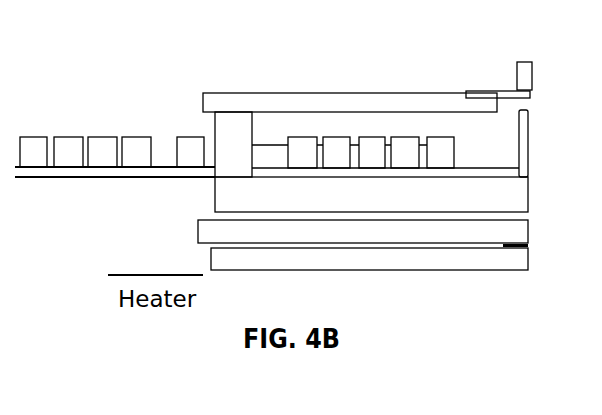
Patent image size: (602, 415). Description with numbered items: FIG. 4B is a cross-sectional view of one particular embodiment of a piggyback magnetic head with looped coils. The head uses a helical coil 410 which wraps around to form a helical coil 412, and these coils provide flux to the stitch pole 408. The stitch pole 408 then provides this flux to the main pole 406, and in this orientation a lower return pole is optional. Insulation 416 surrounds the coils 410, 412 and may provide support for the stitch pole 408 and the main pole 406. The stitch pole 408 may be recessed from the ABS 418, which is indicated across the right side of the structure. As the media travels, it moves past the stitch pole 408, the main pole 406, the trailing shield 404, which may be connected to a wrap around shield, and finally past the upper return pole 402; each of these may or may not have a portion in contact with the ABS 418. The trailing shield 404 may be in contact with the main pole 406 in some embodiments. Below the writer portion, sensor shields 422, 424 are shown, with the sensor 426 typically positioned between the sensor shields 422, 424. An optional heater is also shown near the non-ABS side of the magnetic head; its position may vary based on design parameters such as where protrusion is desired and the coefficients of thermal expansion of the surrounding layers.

The upper return pole 402 is at (533, 75).
The trailing shield 404 is at (530, 148).
The main pole 406 is at (502, 91).
The stitch pole 408 is at (373, 93).
The helical coil 410 is at (440, 138).
The helical coil 412 is at (25, 137).
The insulation 416 is at (419, 205).
The ABS 418 is at (535, 193).
The sensor shield 422 is at (198, 233).
The sensor shield 424 is at (211, 254).
The sensor 426 is at (522, 245).